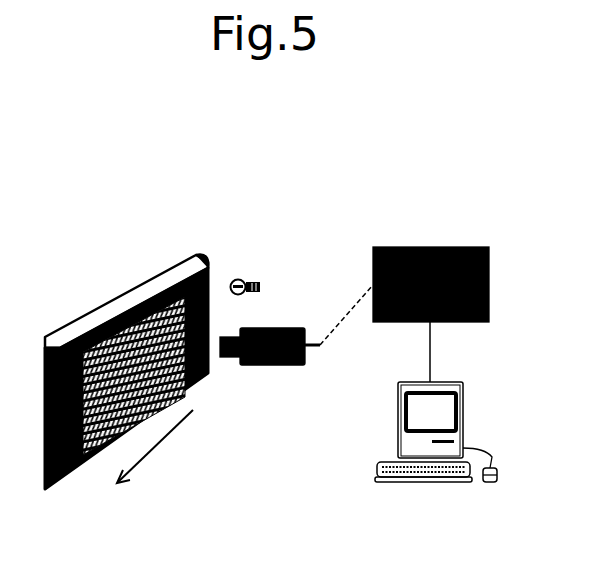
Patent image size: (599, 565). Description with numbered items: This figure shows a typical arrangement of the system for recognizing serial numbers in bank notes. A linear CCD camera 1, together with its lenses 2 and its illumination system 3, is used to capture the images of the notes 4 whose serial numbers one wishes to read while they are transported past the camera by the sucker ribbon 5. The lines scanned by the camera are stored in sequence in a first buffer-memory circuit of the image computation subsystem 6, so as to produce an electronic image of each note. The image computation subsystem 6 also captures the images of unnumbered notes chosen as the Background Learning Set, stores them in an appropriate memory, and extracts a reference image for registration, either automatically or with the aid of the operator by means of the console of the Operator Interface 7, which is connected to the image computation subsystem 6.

The linear CCD camera 1 is at (272, 367).
The lenses 2 is at (176, 446).
The illumination system 3 is at (237, 274).
The notes 4 is at (110, 322).
The sucker ribbon 5 is at (52, 338).
The image computation subsystem 6 is at (371, 262).
The Operator Interface 7 is at (395, 411).